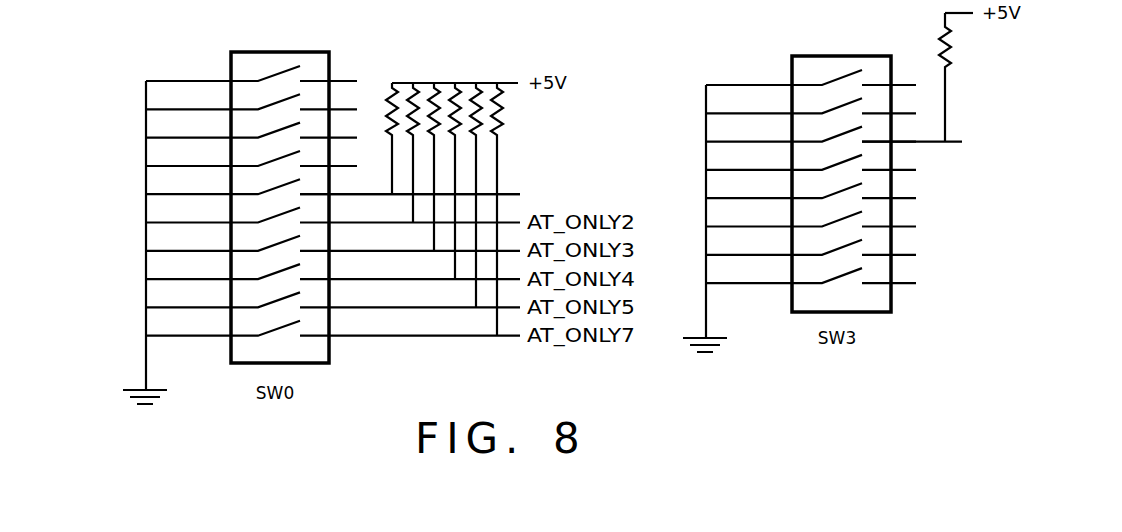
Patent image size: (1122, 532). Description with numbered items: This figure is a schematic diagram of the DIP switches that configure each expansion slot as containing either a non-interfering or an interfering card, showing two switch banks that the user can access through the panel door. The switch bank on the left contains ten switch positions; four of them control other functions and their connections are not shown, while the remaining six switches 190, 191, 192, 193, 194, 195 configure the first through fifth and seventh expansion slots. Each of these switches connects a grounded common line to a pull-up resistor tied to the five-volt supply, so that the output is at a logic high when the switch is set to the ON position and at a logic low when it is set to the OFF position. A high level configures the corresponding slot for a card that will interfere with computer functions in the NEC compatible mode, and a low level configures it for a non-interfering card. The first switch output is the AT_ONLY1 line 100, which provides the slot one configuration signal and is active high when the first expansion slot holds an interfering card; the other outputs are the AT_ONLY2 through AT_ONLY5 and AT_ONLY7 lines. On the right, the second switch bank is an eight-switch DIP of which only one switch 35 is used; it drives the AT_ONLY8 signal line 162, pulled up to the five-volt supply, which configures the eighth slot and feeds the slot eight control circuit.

The switch 190 is at (277, 188).
The switch 191 is at (277, 216).
The switch 192 is at (277, 244).
The switch 193 is at (277, 273).
The switch 194 is at (277, 301).
The switch 195 is at (277, 329).
The AT_ONLY1 line 100 is at (505, 194).
The switch 35 is at (843, 133).
The AT_ONLY8 signal line 162 is at (918, 143).